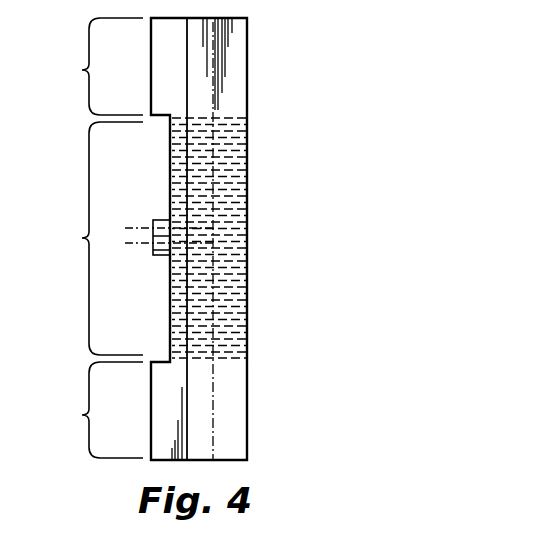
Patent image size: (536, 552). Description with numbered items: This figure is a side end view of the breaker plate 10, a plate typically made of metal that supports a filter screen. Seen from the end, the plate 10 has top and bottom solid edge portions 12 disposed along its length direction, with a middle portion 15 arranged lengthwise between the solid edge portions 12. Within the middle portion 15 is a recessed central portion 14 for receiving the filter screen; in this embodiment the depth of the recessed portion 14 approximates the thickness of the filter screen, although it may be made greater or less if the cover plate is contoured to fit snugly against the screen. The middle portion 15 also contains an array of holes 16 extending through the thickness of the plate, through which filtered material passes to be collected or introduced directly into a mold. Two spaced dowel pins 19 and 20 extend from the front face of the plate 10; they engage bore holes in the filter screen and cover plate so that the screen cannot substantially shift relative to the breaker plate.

The breaker plate 10 is at (256, 68).
The solid edge portions 12 is at (96, 238).
The recessed central portion 14 is at (163, 170).
The middle portion 15 is at (99, 238).
The holes 16 is at (240, 128).
The dowel pin 19 is at (158, 218).
The dowel pin 20 is at (160, 256).